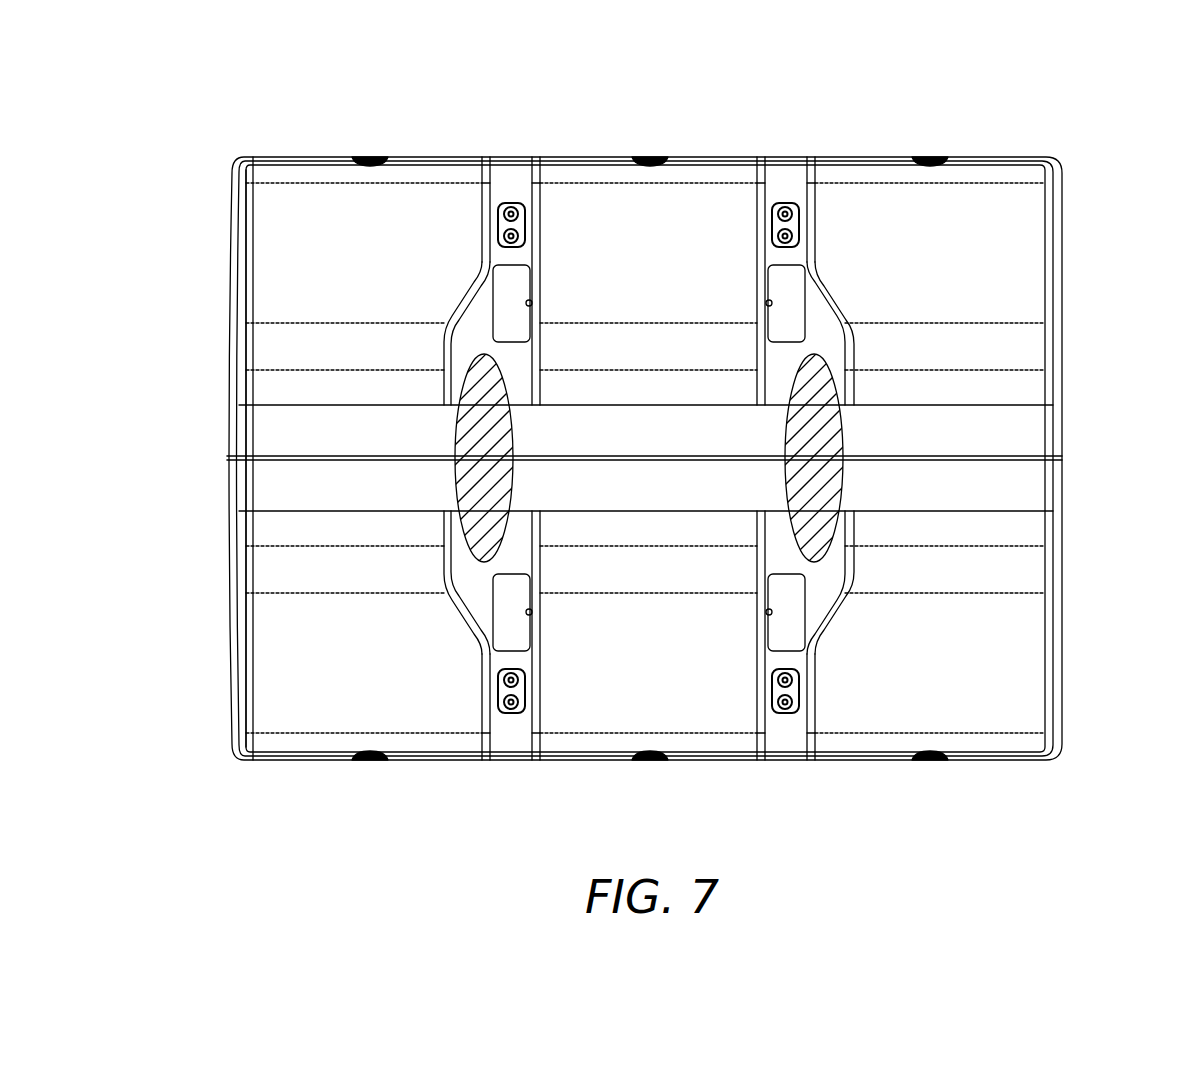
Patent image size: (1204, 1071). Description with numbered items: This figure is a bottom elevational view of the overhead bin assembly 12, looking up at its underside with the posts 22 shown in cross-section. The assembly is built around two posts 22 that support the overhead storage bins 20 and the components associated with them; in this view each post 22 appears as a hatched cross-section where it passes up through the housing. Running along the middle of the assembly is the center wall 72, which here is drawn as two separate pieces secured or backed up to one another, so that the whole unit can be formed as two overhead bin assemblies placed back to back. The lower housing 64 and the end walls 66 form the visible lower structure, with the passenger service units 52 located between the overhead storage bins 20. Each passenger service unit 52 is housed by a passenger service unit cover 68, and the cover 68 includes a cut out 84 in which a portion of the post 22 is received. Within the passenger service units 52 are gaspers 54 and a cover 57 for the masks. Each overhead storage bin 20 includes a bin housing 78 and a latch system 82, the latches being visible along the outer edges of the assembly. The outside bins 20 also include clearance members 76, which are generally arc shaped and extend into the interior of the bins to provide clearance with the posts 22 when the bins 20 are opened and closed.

The overhead bin assembly 12 is at (1132, 157).
The overhead storage bin 20 is at (455, 157).
The post 22 is at (478, 432).
The passenger service unit 52 is at (510, 142).
The gasper 54 is at (528, 222).
The cover 57 is at (522, 270).
The lower housing 64 is at (282, 432).
The end wall 66 is at (240, 564).
The passenger service unit cover 68 is at (470, 332).
The center wall 72 is at (1042, 456).
The clearance member 76 is at (447, 346).
The bin housing 78 is at (291, 180).
The latch system 82 is at (373, 157).
The cut out 84 is at (500, 390).